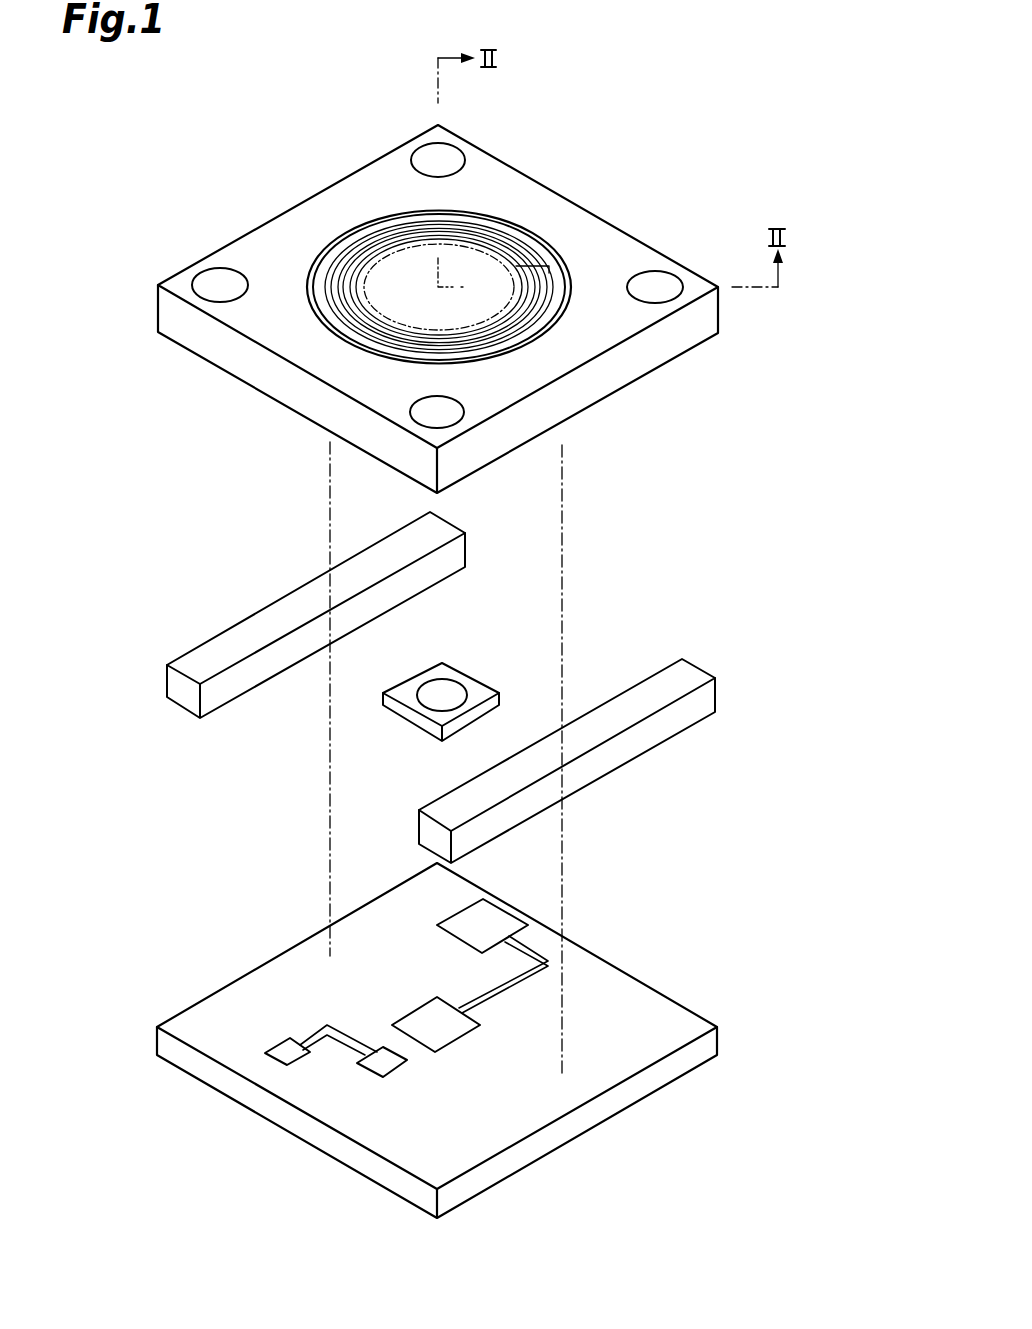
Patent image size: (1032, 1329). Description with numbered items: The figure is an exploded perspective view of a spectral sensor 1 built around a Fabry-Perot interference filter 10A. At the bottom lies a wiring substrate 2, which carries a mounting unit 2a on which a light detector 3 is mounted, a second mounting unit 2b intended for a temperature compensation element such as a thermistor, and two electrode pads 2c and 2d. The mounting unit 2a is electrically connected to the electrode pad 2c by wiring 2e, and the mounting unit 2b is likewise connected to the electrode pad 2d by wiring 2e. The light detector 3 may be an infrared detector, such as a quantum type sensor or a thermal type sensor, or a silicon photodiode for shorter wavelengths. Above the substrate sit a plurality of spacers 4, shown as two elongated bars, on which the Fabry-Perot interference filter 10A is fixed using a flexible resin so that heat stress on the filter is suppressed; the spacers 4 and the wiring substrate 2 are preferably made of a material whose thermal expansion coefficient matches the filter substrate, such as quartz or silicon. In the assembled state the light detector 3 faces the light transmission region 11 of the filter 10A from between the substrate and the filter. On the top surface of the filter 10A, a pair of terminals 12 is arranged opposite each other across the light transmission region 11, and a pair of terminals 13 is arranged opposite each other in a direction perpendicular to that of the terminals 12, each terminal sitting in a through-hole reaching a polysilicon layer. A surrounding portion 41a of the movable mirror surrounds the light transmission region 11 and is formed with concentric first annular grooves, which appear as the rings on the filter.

The spectral sensor 1 is at (670, 89).
The Fabry-Perot interference filter 10A is at (503, 180).
The light transmission region 11 is at (370, 263).
The terminals 12 is at (432, 167).
The terminals 13 is at (220, 283).
The surrounding portion 41a is at (532, 267).
The spacers 4 is at (196, 655).
The light detector 3 is at (442, 690).
The wiring substrate 2 is at (243, 993).
The mounting unit 2a is at (419, 1025).
The mounting unit 2b is at (379, 1065).
The electrode pad 2c is at (488, 915).
The electrode pad 2d is at (283, 1056).
The wiring 2e is at (532, 951).